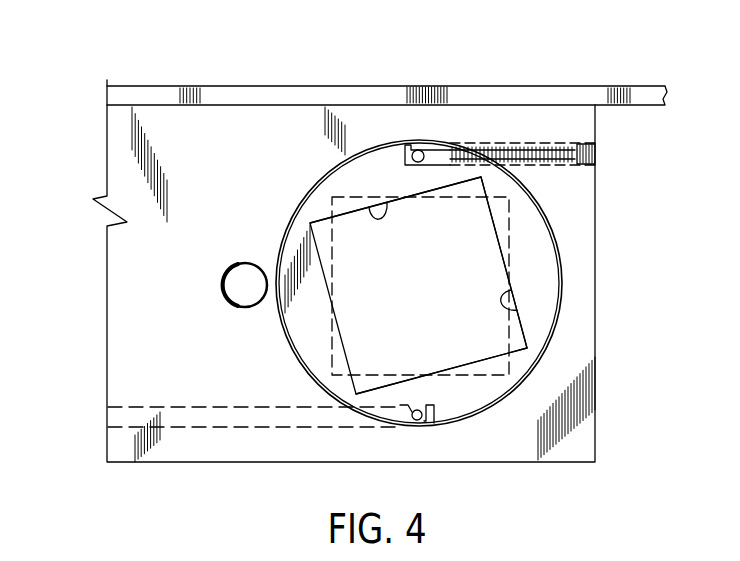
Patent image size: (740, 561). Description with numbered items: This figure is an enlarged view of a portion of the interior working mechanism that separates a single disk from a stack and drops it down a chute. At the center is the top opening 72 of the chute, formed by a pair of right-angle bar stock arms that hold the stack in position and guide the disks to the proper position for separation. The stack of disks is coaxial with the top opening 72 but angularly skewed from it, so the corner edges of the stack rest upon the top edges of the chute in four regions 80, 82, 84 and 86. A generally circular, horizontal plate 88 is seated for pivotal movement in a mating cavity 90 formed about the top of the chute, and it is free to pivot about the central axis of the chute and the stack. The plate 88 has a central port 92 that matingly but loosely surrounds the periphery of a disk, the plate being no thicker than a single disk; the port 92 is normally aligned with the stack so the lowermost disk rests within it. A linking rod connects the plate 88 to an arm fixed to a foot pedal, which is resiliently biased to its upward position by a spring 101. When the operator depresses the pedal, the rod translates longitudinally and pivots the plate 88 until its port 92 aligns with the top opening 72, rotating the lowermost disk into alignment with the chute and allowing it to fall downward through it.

The top opening 72 is at (362, 205).
The region 80 is at (478, 187).
The region 82 is at (515, 342).
The region 84 is at (365, 380).
The region 86 is at (323, 233).
The circular horizontal plate 88 is at (538, 240).
The mating cavity 90 is at (135, 405).
The port 92 is at (518, 296).
The spring 101 is at (502, 150).